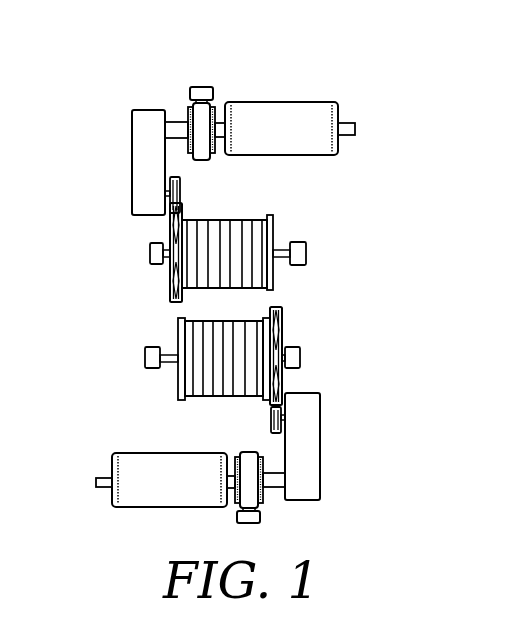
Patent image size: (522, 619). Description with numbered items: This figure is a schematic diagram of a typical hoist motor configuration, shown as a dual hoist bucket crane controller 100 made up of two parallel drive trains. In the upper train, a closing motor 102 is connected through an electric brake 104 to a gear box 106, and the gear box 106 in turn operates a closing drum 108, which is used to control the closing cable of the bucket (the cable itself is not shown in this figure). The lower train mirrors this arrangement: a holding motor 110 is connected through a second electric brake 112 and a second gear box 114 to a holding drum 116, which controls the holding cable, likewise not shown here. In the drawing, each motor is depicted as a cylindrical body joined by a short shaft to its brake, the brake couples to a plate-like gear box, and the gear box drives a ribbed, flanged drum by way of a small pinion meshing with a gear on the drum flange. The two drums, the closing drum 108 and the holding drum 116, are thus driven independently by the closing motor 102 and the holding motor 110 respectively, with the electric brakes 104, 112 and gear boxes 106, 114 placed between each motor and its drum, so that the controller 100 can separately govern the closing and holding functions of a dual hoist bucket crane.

The dual hoist bucket crane controller 100 is at (291, 67).
The closing motor 102 is at (318, 101).
The electric brake 104 is at (191, 91).
The gear box 106 is at (132, 174).
The closing drum 108 is at (272, 226).
The holding motor 110 is at (127, 508).
The electric brake 112 is at (261, 513).
The gear box 114 is at (320, 458).
The holding drum 116 is at (279, 317).